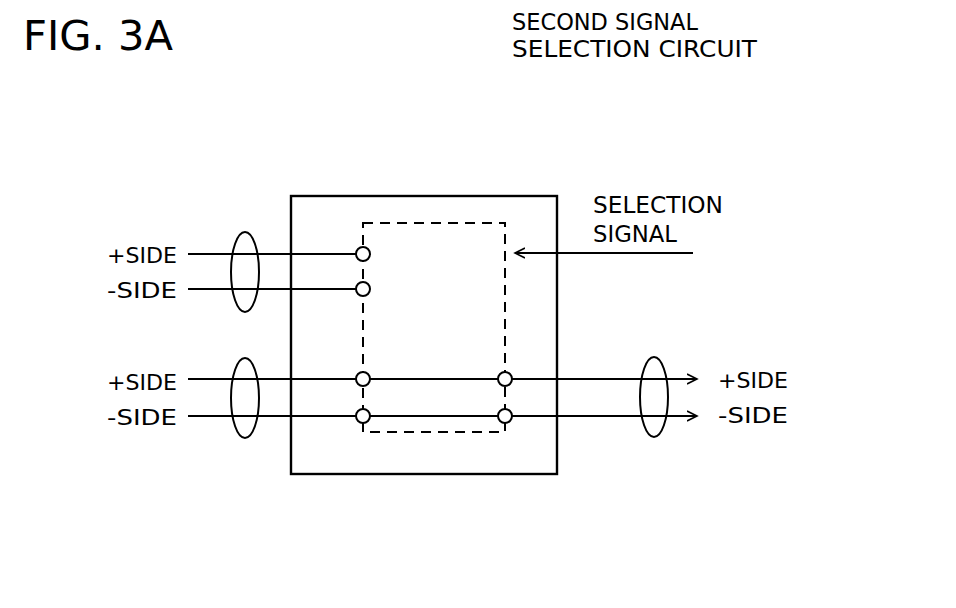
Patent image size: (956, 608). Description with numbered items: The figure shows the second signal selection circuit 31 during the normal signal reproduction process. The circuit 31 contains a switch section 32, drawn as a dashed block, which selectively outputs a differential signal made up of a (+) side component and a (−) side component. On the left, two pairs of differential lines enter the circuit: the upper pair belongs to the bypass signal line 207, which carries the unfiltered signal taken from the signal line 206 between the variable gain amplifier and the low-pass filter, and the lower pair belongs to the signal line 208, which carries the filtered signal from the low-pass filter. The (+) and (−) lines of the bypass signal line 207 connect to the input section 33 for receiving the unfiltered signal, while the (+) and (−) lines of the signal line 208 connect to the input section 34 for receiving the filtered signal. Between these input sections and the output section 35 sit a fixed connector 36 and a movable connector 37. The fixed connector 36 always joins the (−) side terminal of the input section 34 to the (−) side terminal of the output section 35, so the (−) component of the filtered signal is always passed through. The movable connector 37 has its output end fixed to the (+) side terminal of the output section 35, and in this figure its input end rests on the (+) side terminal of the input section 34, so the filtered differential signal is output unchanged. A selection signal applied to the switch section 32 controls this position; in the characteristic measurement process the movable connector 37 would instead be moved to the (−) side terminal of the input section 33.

The second signal selection circuit 31 is at (510, 190).
The switch section 32 is at (435, 223).
The input section for receiving the unfiltered signal 33 is at (329, 246).
The input section for receiving the filtered signal 34 is at (330, 424).
The output section 35 is at (533, 426).
The fixed connector 36 is at (423, 418).
The movable connector 37 is at (423, 378).
The signal line 206 is at (245, 438).
The bypass signal line 207 is at (245, 232).
The signal line 208 is at (654, 437).